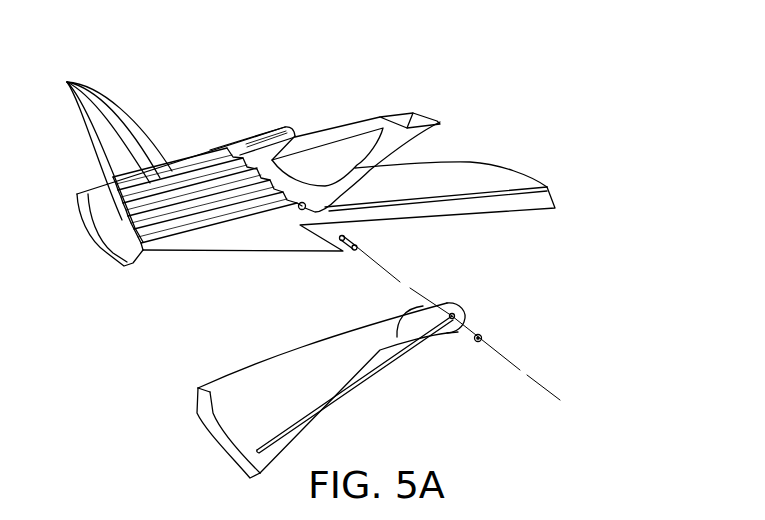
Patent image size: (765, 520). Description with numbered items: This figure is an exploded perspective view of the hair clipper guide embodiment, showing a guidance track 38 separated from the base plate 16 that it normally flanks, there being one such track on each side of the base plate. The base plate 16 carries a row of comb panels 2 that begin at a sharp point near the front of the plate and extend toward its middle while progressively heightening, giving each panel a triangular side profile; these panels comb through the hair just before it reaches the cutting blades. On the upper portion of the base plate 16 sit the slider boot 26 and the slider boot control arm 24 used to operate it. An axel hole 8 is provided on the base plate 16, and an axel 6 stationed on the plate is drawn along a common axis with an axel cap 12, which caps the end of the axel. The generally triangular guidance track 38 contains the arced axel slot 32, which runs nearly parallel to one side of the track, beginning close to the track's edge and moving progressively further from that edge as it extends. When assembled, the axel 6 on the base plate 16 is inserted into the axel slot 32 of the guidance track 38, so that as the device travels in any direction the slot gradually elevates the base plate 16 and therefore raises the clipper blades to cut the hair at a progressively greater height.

The comb panels 2 is at (67, 82).
The axel 6 is at (343, 245).
The axel hole 8 is at (292, 214).
The axel cap 12 is at (480, 336).
The base plate 16 is at (470, 183).
The slider boot control arm 24 is at (252, 137).
The slider boot 26 is at (403, 117).
The axel slot 32 is at (405, 312).
The guidance tracks 38 is at (233, 393).